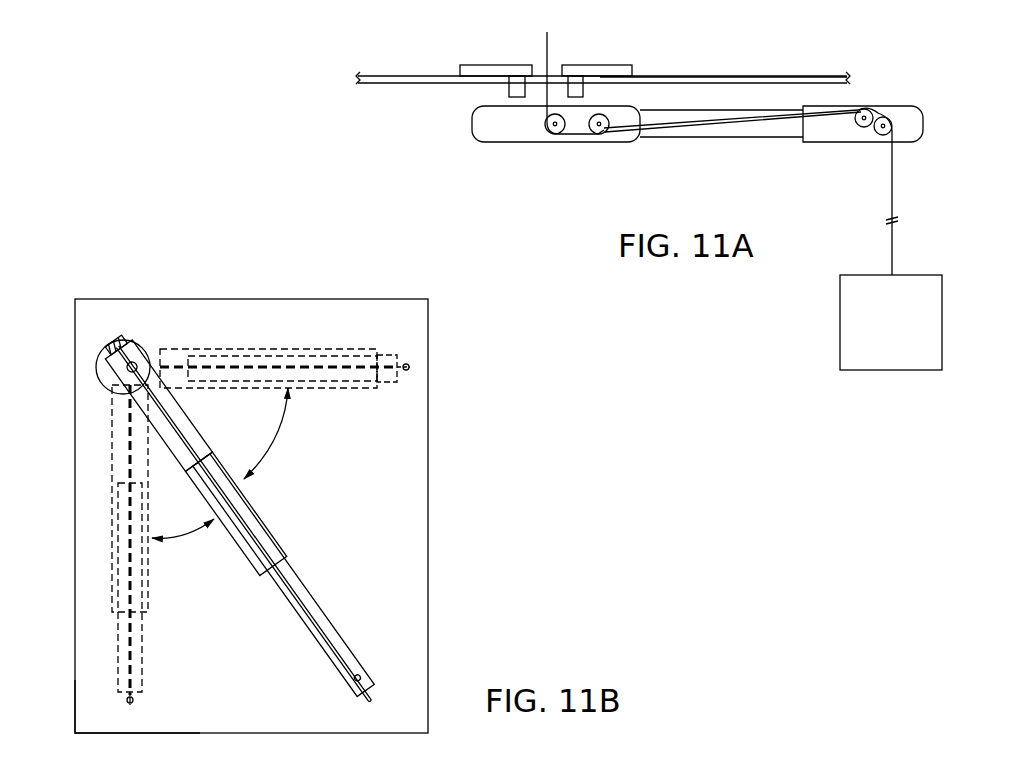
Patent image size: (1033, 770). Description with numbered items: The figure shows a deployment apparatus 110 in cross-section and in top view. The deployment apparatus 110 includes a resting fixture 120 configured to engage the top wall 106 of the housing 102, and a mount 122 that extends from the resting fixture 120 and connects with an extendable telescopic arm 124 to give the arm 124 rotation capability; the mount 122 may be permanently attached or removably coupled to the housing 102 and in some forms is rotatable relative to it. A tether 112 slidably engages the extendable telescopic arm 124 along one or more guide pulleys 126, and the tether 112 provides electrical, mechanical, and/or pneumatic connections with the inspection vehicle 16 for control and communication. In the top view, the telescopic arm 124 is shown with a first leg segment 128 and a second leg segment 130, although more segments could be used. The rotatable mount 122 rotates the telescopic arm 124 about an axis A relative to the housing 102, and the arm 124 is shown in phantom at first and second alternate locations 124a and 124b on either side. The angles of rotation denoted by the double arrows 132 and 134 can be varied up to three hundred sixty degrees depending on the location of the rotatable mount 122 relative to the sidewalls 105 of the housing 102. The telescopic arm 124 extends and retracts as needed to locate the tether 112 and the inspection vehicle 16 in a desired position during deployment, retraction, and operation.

In FIG. 11A, the inspection vehicle 16 is at (904, 333).
In FIG. 11A, the housing 102 is at (815, 75).
In FIG. 11B, the housing 102 is at (92, 678).
In FIG. 11B, the sidewalls 105 is at (300, 298).
In FIG. 11A, the top wall 106 is at (755, 75).
In FIG. 11A, the deployment apparatus 110 is at (589, 164).
In FIG. 11B, the deployment apparatus 110 is at (302, 527).
In FIG. 11A, the tether 112 is at (550, 47).
In FIG. 11B, the tether 112 is at (338, 660).
In FIG. 11A, the resting fixture 120 is at (613, 63).
In FIG. 11A, the mount 122 is at (508, 88).
In FIG. 11B, the mount 122 is at (108, 350).
In FIG. 11A, the extendable telescopic arm 124 is at (510, 140).
In FIG. 11B, the extendable telescopic arm 124 is at (253, 500).
In FIG. 11B, the first alternate location of telescopic arm 124a is at (201, 347).
In FIG. 11B, the second alternate location of telescopic arm 124b is at (106, 476).
In FIG. 11A, the guide pulleys 126 is at (605, 131).
In FIG. 11B, the first leg segment 128 is at (175, 405).
In FIG. 11B, the second leg segment 130 is at (315, 600).
In FIG. 11B, the double arrow 132 is at (185, 537).
In FIG. 11B, the double arrow 134 is at (300, 431).
In FIG. 11B, the axis A is at (140, 352).